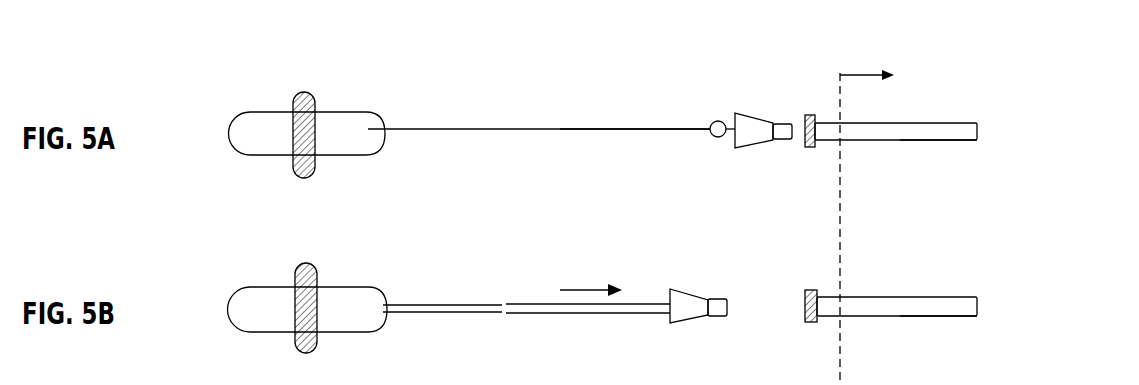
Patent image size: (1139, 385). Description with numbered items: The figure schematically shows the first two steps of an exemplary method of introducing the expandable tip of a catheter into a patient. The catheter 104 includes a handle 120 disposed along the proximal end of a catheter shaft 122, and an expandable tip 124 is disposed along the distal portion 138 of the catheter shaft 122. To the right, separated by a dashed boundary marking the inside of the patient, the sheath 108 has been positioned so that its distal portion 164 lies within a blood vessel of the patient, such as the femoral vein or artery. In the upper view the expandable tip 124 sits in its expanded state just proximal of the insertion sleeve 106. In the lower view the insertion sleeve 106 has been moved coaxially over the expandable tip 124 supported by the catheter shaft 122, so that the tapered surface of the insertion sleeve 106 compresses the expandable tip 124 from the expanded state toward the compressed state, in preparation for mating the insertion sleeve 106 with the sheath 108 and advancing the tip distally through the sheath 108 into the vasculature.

In FIG. 5A, the catheter 104 is at (408, 91).
In FIG. 5B, the catheter 104 is at (408, 276).
In FIG. 5A, the handle 120 is at (242, 125).
In FIG. 5B, the handle 120 is at (243, 308).
In FIG. 5A, the catheter shaft 122 is at (484, 127).
In FIG. 5B, the catheter shaft 122 is at (485, 303).
In FIG. 5A, the distal portion 138 is at (646, 127).
In FIG. 5A, the expandable tip 124 is at (720, 119).
In FIG. 5A, the insertion sleeve 106 is at (752, 145).
In FIG. 5B, the insertion sleeve 106 is at (690, 319).
In FIG. 5A, the sheath 108 is at (909, 111).
In FIG. 5B, the sheath 108 is at (910, 287).
In FIG. 5A, the distal portion 164 is at (968, 142).
In FIG. 5B, the distal portion 164 is at (966, 317).